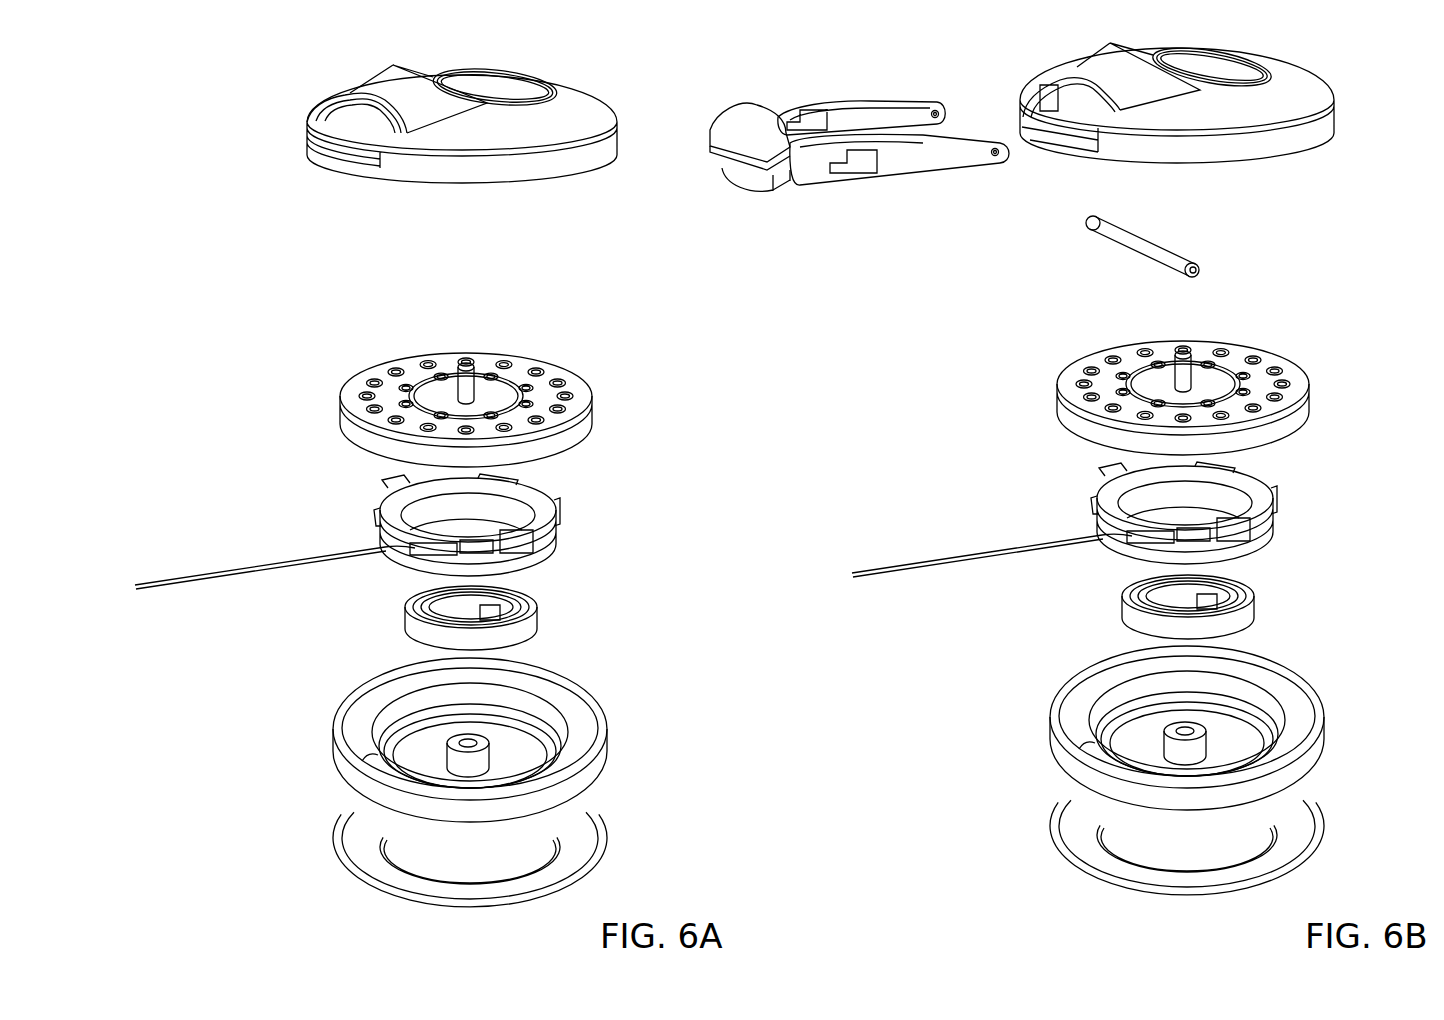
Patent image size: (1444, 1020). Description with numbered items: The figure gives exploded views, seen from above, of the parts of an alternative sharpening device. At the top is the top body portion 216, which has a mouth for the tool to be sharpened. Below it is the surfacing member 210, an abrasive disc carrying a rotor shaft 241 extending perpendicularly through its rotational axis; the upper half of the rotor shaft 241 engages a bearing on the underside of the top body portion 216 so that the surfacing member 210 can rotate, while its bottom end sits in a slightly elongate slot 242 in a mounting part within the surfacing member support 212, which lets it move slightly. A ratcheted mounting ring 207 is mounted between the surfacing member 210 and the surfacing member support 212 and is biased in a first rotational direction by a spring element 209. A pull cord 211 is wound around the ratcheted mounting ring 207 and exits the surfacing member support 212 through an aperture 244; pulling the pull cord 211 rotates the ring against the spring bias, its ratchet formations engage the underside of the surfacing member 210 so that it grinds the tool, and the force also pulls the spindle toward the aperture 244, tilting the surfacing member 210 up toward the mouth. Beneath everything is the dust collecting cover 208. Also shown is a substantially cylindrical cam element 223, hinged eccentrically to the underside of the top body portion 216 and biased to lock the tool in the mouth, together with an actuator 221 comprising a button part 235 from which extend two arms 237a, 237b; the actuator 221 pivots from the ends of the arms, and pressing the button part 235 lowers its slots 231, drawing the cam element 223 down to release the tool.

In FIG. 6A, the top body portion 216 is at (543, 167).
In FIG. 6B, the top body portion 216 is at (1260, 147).
In FIG. 6B, the button part 235 is at (740, 120).
In FIG. 6B, the arm 237a is at (880, 112).
In FIG. 6B, the arm 237b is at (974, 148).
In FIG. 6B, the actuator 221 is at (823, 186).
In FIG. 6B, the slots 231 is at (860, 167).
In FIG. 6B, the cam element 223 is at (1143, 237).
In FIG. 6A, the rotor shaft 241 is at (367, 378).
In FIG. 6B, the rotor shaft 241 is at (1120, 336).
In FIG. 6A, the surfacing member 210 is at (524, 398).
In FIG. 6B, the surfacing member 210 is at (1241, 386).
In FIG. 6A, the ratcheted mounting ring 207 is at (519, 520).
In FIG. 6B, the ratcheted mounting ring 207 is at (1236, 508).
In FIG. 6A, the pull cord 211 is at (325, 548).
In FIG. 6B, the pull cord 211 is at (1050, 533).
In FIG. 6A, the spring element 209 is at (526, 610).
In FIG. 6B, the spring element 209 is at (1243, 599).
In FIG. 6A, the slot 242 is at (546, 708).
In FIG. 6B, the slot 242 is at (1098, 693).
In FIG. 6A, the surfacing member support 212 is at (516, 740).
In FIG. 6B, the surfacing member support 212 is at (1233, 728).
In FIG. 6A, the aperture 244 is at (305, 784).
In FIG. 6B, the aperture 244 is at (1022, 772).
In FIG. 6A, the dust collecting cover 208 is at (516, 852).
In FIG. 6B, the dust collecting cover 208 is at (1233, 840).